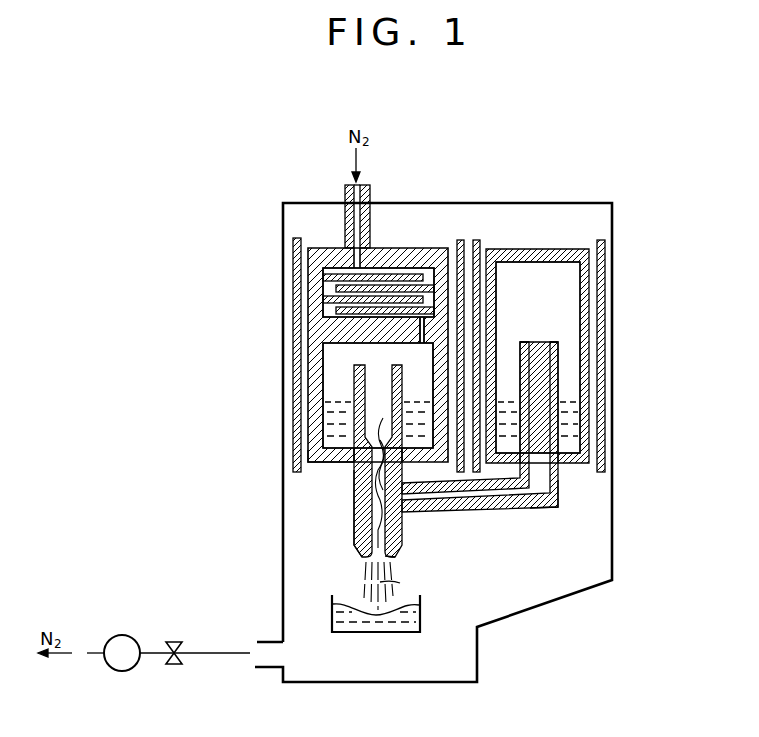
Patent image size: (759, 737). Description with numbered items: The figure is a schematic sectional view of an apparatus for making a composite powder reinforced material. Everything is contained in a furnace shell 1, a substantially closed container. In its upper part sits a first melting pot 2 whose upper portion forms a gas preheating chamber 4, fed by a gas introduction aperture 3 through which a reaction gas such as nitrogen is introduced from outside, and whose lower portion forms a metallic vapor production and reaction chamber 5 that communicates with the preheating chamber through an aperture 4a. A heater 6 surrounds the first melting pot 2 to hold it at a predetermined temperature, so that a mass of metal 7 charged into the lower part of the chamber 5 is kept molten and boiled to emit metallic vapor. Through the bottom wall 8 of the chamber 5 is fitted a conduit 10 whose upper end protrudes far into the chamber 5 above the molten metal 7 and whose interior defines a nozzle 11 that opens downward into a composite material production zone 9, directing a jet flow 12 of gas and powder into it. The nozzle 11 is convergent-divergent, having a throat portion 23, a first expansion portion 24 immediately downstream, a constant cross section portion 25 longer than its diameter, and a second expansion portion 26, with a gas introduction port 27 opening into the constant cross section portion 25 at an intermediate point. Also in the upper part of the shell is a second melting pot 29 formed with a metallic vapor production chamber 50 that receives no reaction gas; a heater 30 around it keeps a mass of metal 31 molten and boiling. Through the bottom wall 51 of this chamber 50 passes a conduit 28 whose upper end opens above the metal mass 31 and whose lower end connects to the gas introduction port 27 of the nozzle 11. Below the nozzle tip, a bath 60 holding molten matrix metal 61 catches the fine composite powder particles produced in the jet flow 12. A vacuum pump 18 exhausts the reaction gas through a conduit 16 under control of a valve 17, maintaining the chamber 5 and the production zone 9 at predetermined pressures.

The furnace shell 1 is at (612, 212).
The first melting pot 2 is at (313, 357).
The gas introduction aperture 3 is at (364, 186).
The gas preheating chamber 4 is at (330, 310).
The aperture 4a is at (423, 343).
The metallic vapor production and reaction chamber 5 is at (335, 368).
The heater 6 is at (297, 238).
The mass of metal 7 is at (334, 425).
The bottom wall 8 is at (336, 455).
The composite material production zone 9 is at (440, 592).
The conduit 10 is at (400, 386).
The nozzle 11 is at (356, 541).
The jet flow 12 is at (397, 576).
The conduit 16 is at (221, 652).
The valve 17 is at (173, 641).
The vacuum pump 18 is at (121, 635).
The throat portion 23 is at (378, 471).
The first expansion portion 24 is at (400, 486).
The constant cross section portion 25 is at (366, 500).
The second expansion portion 26 is at (404, 549).
The gas introduction port 27 is at (408, 508).
The conduit 28 is at (550, 488).
The second melting pot 29 is at (588, 320).
The heater 30 is at (477, 240).
The mass of metal 31 is at (572, 415).
The metallic vapor production chamber 50 is at (540, 292).
The bottom wall 51 is at (562, 470).
The bath 60 is at (397, 634).
The molten matrix metal 61 is at (421, 622).